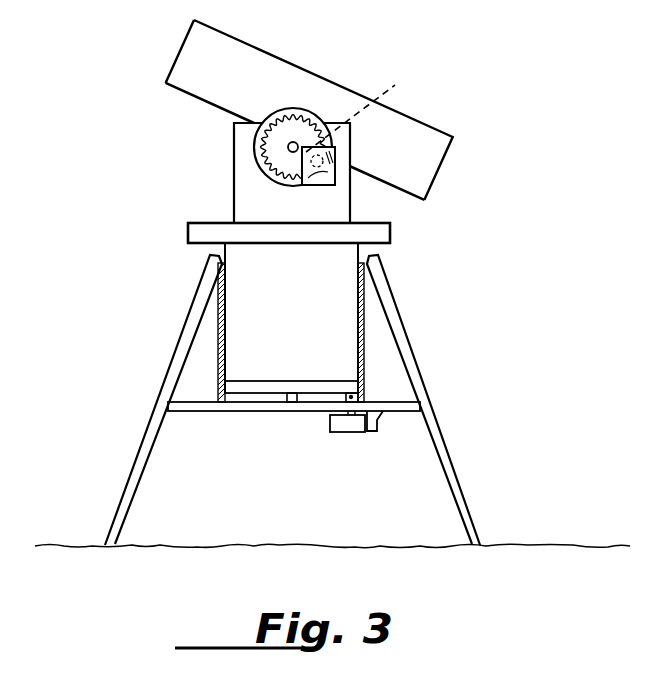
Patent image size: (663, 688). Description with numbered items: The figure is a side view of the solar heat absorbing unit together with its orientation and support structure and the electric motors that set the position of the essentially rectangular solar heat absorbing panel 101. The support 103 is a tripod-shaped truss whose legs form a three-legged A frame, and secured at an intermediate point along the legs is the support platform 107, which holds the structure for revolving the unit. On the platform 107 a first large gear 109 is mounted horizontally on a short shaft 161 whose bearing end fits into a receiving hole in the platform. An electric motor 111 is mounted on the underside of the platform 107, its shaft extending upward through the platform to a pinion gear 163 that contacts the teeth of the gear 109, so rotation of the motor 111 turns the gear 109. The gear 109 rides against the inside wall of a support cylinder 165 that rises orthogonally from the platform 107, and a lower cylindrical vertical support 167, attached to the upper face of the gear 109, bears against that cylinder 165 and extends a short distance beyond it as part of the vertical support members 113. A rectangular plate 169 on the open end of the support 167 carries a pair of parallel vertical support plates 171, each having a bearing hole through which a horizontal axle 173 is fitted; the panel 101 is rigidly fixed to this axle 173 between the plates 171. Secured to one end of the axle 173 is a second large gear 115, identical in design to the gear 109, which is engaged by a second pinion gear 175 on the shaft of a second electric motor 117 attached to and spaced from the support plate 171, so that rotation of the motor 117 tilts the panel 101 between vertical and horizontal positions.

The solar heat absorbing panel 101 is at (198, 67).
The support 103 is at (453, 477).
The support platform 107 is at (402, 407).
The first large gear 109 is at (262, 387).
The electric motor 111 is at (343, 427).
The vertical support members 113 is at (308, 316).
The second large gear 115 is at (256, 147).
The second electric motor 117 is at (330, 177).
The short shaft 161 is at (288, 398).
The pinion gear 163 is at (363, 377).
The support cylinder 165 is at (363, 337).
The cylindrical vertical support 167 is at (250, 293).
The rectangular plate 169 is at (200, 232).
The vertical support plates 171 is at (275, 214).
The axle 173 is at (295, 142).
The second pinion gear 175 is at (395, 85).